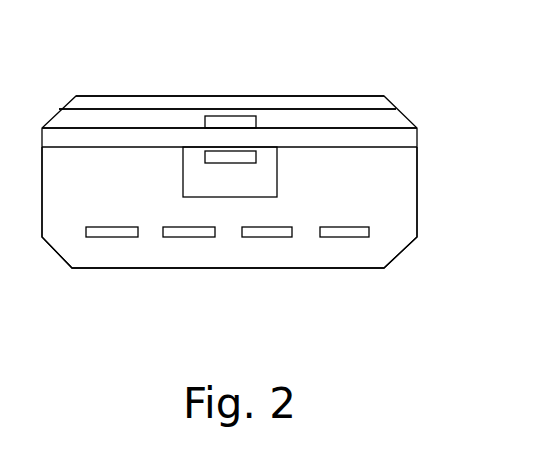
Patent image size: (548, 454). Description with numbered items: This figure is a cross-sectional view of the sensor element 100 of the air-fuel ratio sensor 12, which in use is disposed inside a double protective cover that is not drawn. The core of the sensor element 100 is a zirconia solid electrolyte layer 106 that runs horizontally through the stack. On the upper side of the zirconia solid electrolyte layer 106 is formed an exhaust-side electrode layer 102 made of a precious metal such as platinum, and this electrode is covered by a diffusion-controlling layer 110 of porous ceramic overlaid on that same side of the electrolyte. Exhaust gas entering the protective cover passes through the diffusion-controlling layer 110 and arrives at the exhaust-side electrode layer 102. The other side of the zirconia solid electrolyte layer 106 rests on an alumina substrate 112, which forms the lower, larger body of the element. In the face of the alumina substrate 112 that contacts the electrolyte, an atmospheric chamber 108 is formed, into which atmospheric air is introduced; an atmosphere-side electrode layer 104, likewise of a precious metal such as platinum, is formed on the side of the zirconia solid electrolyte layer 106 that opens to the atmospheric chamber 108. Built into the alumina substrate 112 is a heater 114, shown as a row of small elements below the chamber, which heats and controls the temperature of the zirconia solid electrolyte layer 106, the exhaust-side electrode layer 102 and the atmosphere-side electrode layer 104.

The air-fuel ratio sensor 12 is at (202, 80).
The sensor element 100 is at (98, 96).
The exhaust-side electrode layer 102 is at (238, 114).
The atmosphere-side electrode layer 104 is at (245, 163).
The zirconia solid electrolyte layer 106 is at (150, 135).
The atmospheric chamber 108 is at (217, 182).
The diffusion-controlling layer 110 is at (326, 122).
The alumina substrate 112 is at (391, 212).
The heater 114 is at (187, 237).